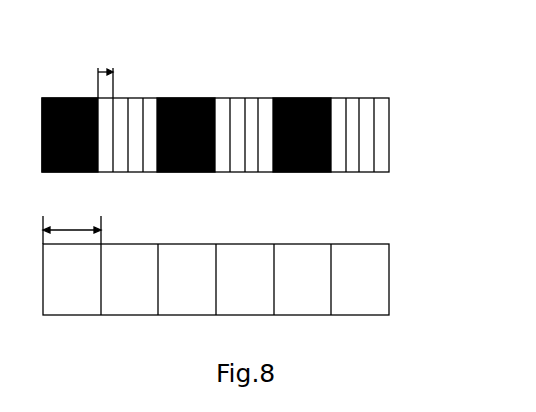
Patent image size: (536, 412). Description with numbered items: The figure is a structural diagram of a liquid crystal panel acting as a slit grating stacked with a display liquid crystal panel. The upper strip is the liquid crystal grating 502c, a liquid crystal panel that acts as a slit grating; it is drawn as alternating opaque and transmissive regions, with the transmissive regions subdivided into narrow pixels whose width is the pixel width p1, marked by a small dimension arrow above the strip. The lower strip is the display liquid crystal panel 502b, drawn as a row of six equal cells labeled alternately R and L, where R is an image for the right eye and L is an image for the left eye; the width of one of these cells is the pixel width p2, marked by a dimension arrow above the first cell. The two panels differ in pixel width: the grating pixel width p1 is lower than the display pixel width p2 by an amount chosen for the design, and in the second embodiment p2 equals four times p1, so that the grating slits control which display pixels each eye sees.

The liquid crystal grating 502c is at (243, 135).
The liquid crystal panel 502b is at (244, 279).
The pixel width of the liquid crystal panel acting as a slit grating p1 is at (104, 73).
The pixel width of the display liquid crystal panel p2 is at (72, 224).